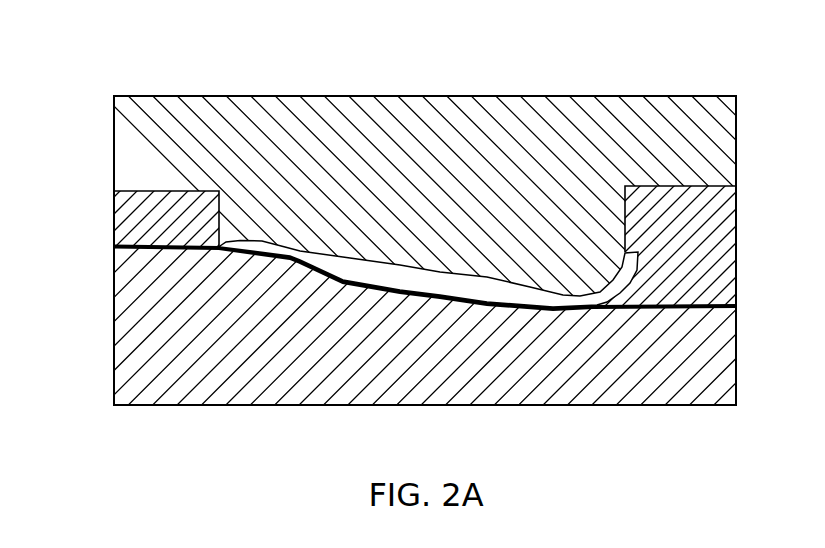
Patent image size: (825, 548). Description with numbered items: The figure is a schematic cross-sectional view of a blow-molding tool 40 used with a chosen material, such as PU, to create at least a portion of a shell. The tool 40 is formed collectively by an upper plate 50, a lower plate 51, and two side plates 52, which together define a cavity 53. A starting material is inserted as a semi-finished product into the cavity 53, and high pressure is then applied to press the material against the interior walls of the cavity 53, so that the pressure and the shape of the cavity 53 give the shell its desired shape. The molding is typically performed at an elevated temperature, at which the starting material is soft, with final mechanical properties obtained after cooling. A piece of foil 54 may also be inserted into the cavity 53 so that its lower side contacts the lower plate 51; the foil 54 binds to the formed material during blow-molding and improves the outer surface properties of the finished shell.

The blow-molding tool 40 is at (290, 74).
The upper plate 50 is at (492, 114).
The lower plate 51 is at (454, 358).
The side plates 52 is at (133, 226).
The cavity 53 is at (414, 283).
The foil 54 is at (503, 308).